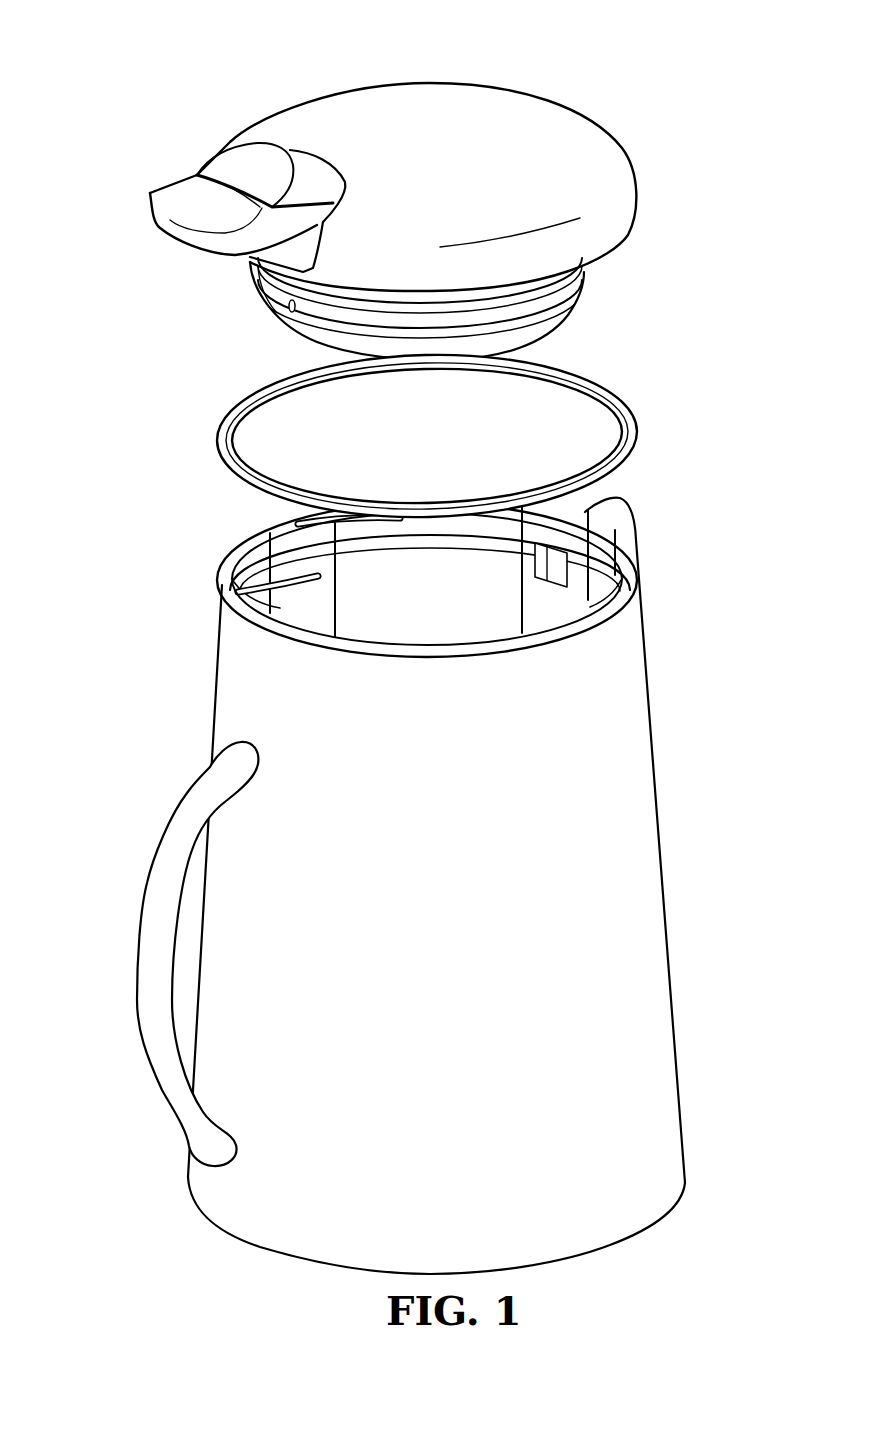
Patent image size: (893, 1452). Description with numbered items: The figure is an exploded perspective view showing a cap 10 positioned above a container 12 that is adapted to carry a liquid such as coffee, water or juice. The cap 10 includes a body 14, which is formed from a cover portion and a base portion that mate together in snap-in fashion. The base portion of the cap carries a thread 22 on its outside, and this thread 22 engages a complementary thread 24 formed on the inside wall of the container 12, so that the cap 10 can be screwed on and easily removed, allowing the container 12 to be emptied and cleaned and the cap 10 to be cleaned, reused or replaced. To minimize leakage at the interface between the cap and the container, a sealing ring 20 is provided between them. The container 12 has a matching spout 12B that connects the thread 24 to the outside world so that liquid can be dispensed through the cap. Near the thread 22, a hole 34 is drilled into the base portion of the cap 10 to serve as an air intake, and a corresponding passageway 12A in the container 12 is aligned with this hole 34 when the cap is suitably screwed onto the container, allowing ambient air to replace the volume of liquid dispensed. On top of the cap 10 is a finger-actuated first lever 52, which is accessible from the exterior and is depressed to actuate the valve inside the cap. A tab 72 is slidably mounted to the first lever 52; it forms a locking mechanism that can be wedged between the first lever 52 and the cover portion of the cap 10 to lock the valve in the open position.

The cap 10 is at (188, 65).
The container 12 is at (635, 882).
The passageway 12A is at (257, 660).
The spout 12B is at (621, 516).
The body 14 is at (547, 135).
The sealing ring 20 is at (222, 422).
The thread 22 is at (260, 277).
The complementary thread 24 is at (255, 568).
The hole 34 is at (285, 307).
The first lever 52 is at (167, 190).
The tab 72 is at (237, 162).